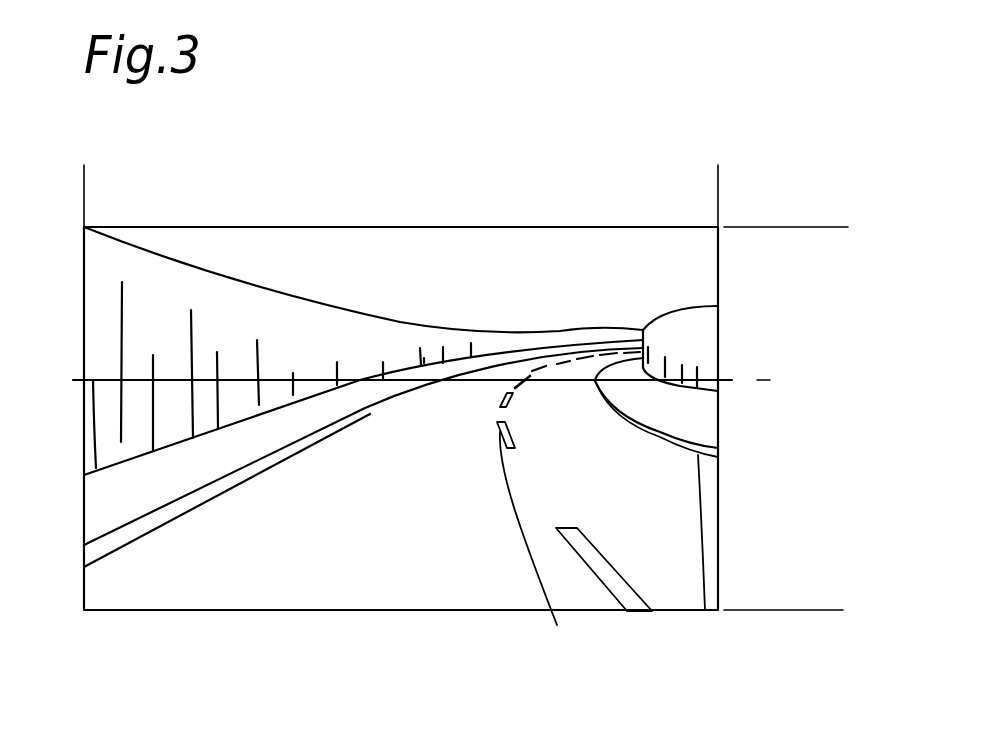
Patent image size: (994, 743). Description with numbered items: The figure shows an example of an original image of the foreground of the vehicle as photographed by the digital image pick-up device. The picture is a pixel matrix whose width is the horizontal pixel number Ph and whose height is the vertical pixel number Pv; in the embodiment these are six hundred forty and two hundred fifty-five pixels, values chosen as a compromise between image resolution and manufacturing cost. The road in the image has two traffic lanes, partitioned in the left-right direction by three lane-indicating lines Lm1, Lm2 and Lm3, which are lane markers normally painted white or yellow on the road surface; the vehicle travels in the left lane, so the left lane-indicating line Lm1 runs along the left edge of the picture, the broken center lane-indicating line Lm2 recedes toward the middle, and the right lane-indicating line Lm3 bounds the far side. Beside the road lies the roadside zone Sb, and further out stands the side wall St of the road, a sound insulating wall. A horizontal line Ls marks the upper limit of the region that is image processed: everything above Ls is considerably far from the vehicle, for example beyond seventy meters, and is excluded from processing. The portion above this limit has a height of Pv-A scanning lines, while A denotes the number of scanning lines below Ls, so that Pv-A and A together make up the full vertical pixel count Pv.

The side wall of the road St is at (104, 292).
The upper limit of the image-processed region Ls is at (102, 380).
The roadside zone Sb is at (104, 516).
The lane-indicating line Lm1 is at (101, 543).
The lane-indicating line Lm2 is at (598, 562).
The lane-indicating line Lm3 is at (705, 610).
The number of pixels in the horizontal direction Ph is at (718, 175).
The number of pixels in the vertical direction Pv is at (835, 227).
The number of scanning lines above Ls Pv-A is at (763, 227).
The number of scanning lines below Ls A is at (763, 380).